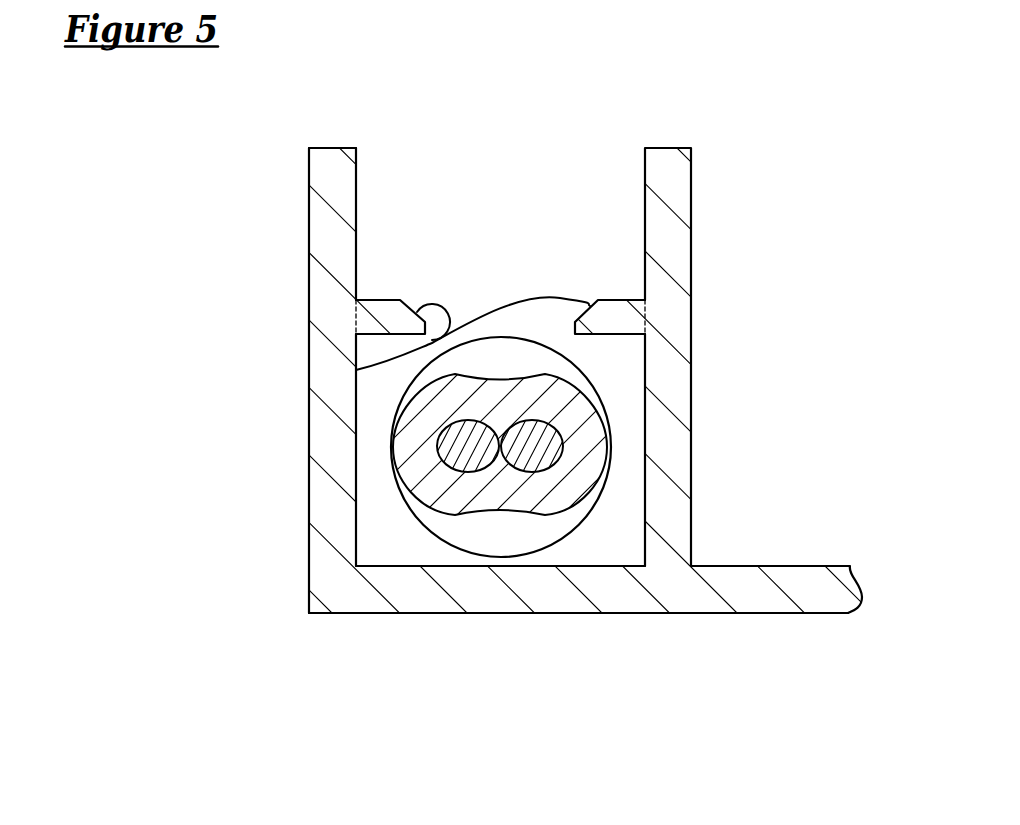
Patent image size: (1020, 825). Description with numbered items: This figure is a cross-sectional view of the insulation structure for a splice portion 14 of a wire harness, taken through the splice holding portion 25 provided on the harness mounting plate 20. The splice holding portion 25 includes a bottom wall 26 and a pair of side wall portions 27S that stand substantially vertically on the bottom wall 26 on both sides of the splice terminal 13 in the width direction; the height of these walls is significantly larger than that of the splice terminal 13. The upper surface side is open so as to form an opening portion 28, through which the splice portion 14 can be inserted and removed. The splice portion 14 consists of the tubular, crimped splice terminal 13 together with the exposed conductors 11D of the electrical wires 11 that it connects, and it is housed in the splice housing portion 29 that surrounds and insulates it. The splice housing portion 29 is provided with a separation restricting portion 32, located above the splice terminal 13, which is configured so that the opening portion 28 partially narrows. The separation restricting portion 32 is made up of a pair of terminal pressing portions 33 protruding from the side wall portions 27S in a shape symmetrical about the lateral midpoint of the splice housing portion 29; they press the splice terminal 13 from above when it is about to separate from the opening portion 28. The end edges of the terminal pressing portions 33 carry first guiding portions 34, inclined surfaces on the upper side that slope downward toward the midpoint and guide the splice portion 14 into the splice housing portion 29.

The splice holding portion 25 is at (546, 412).
The side wall portions 27S is at (323, 233).
The opening portion 28 is at (357, 168).
The bottom wall 26 is at (478, 603).
The harness mounting plate 20 is at (418, 603).
The terminal pressing portions 33 is at (387, 310).
The separation restricting portion 32 is at (500, 196).
The first guiding portions 34 is at (356, 370).
The splice housing portion 29 is at (357, 443).
The splice portion 14 is at (473, 520).
The splice terminal 13 is at (582, 478).
The conductors 11D is at (473, 458).
The electrical wires 11 is at (514, 557).